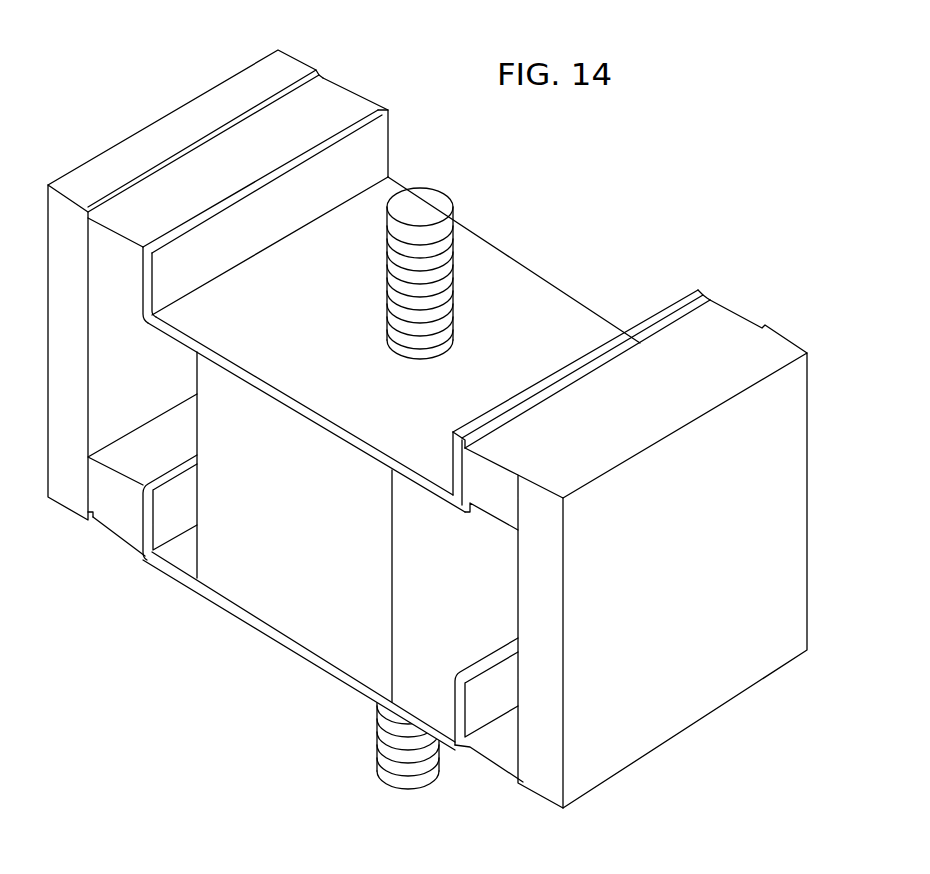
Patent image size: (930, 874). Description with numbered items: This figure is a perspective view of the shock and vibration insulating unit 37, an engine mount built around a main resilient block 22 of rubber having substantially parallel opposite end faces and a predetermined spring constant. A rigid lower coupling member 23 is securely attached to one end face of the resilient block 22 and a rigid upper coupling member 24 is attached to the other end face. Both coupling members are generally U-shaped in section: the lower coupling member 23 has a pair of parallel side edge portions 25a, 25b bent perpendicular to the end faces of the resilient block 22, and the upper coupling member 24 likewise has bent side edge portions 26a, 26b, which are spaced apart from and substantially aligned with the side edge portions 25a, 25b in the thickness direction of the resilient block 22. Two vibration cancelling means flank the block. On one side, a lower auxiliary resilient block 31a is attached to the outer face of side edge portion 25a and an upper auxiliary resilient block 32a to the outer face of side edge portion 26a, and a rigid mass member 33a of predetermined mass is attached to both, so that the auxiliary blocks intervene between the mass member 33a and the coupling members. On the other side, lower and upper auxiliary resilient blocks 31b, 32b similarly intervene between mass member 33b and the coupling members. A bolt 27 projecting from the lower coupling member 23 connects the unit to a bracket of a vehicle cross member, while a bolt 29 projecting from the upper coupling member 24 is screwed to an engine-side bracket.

The main resilient block 22 is at (314, 541).
The lower coupling member 23 is at (270, 637).
The upper coupling member 24 is at (537, 258).
The side edge portion 25a is at (155, 515).
The side edge portion 25b is at (452, 700).
The side edge portion 26a is at (392, 131).
The side edge portion 26b is at (686, 294).
The bolt 27 is at (377, 760).
The bolt 29 is at (432, 207).
The lower auxiliary resilient block 31a is at (118, 527).
The lower auxiliary resilient block 31b is at (495, 763).
The upper auxiliary resilient block 32a is at (348, 100).
The upper auxiliary resilient block 32b is at (738, 316).
The mass member 33a is at (159, 119).
The mass member 33b is at (692, 724).
The shock and vibration insulating unit 37 is at (527, 206).